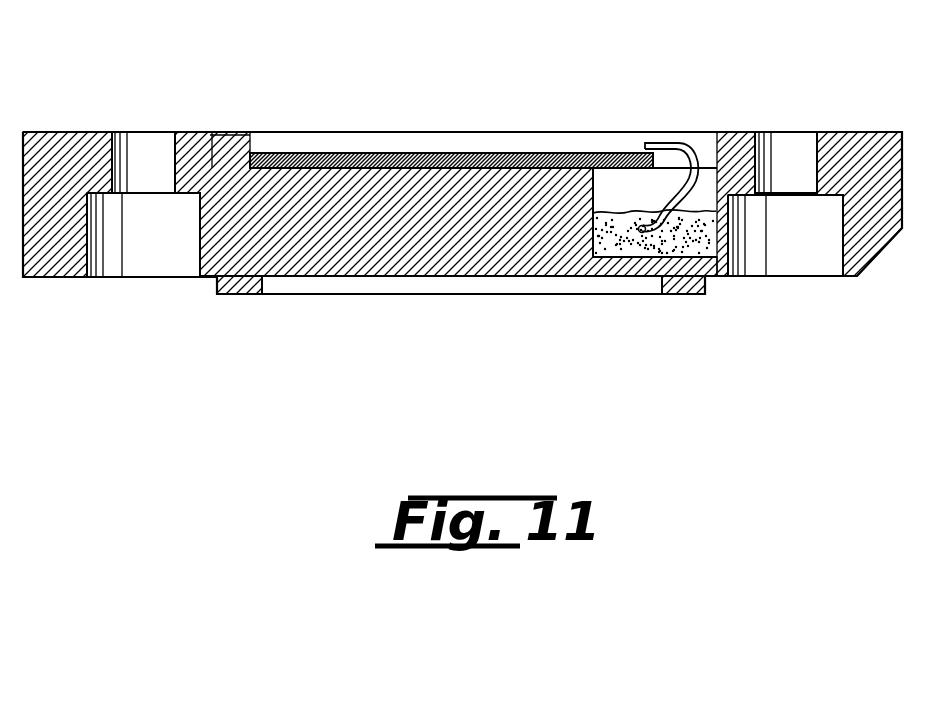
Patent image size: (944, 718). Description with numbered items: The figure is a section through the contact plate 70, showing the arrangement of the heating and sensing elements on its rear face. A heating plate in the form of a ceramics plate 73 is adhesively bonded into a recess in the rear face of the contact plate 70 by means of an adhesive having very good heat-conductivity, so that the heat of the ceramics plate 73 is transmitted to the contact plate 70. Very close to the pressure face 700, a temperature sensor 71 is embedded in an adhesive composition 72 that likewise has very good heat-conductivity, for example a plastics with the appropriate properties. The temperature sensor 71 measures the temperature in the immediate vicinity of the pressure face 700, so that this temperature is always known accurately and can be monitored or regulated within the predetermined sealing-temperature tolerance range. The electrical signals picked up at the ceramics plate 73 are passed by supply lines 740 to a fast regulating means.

The contact plate 70 is at (373, 253).
The pressure face 700 is at (233, 295).
The temperature sensor 71 is at (643, 243).
The adhesive composition 72 is at (703, 245).
The ceramics plate 73 is at (323, 135).
The supply lines 740 is at (698, 134).